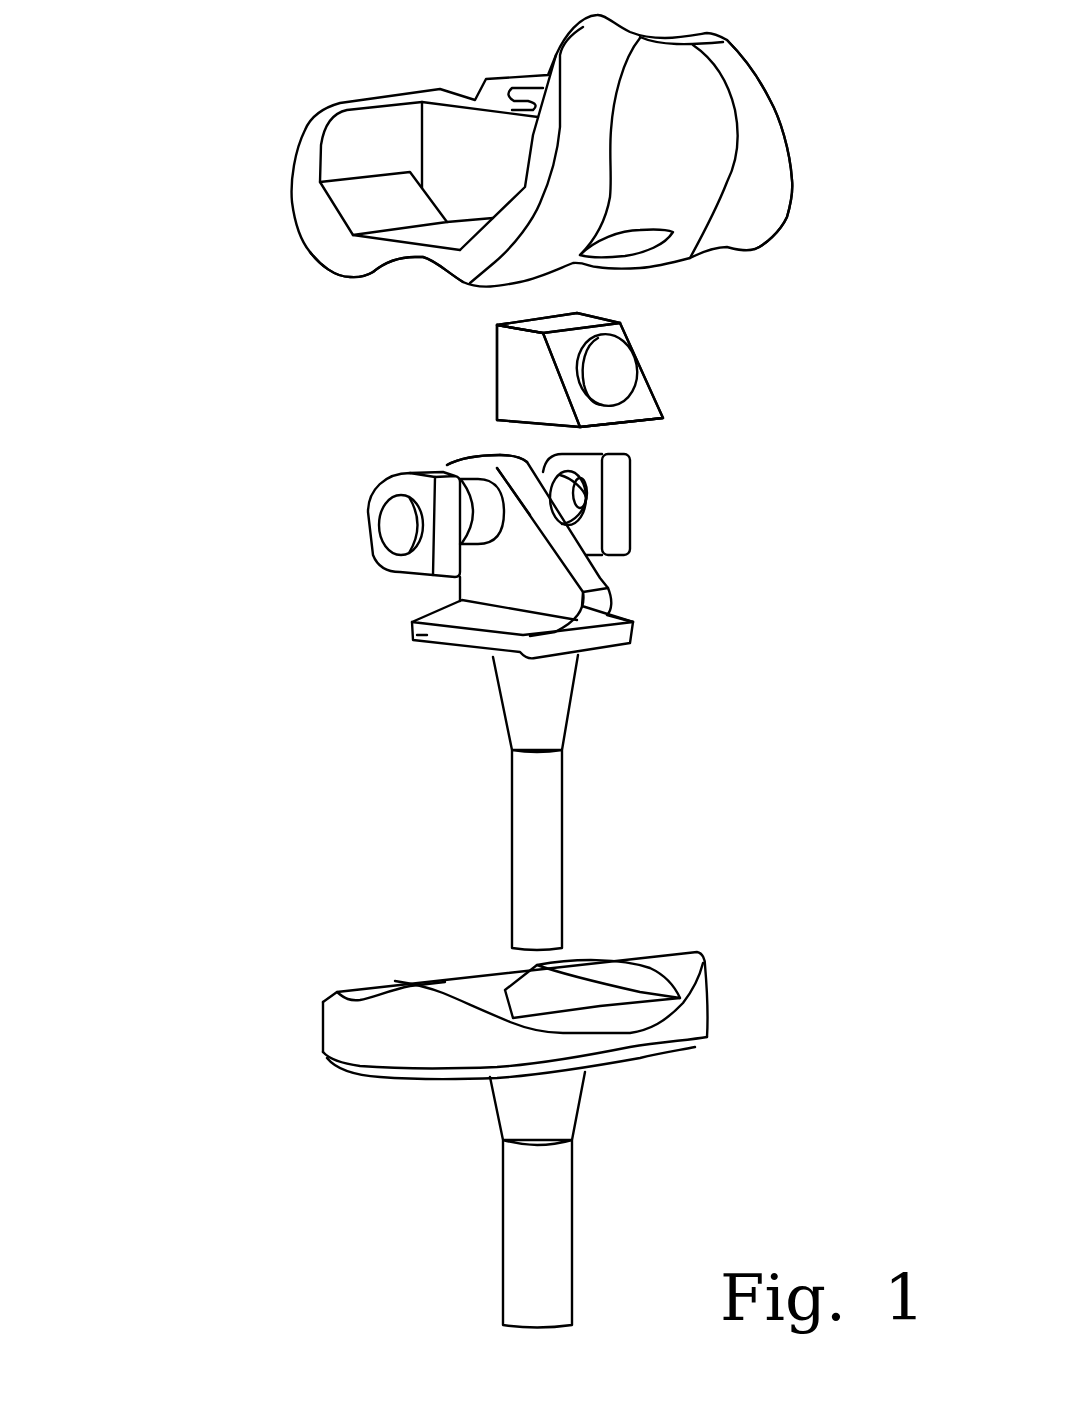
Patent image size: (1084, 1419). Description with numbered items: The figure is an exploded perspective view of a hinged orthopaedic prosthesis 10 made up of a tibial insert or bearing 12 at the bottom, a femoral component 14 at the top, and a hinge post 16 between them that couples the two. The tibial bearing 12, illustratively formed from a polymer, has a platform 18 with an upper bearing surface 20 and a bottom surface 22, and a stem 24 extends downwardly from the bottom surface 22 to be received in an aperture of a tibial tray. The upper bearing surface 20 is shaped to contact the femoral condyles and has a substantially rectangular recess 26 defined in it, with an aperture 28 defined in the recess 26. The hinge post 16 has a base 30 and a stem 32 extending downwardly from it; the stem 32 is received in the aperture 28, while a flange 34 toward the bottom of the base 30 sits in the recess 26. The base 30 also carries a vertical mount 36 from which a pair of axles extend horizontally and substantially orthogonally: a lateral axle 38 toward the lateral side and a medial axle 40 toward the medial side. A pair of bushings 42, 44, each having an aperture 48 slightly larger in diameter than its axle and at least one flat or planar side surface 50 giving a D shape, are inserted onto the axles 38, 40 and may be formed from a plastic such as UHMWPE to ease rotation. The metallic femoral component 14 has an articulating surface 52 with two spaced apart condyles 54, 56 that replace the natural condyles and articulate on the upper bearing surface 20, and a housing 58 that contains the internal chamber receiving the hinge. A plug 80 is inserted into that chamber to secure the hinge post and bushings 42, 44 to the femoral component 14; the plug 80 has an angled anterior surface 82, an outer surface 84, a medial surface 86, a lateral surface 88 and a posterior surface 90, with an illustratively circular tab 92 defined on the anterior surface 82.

The hinged orthopaedic prosthesis 10 is at (236, 732).
The tibial insert or bearing 12 is at (700, 970).
The femoral component 14 is at (793, 190).
The hinge post 16 is at (600, 585).
The platform 18 is at (340, 1027).
The upper bearing surface 20 is at (430, 987).
The bottom surface 22 is at (663, 1060).
The stem 24 is at (562, 1240).
The recess 26 is at (553, 993).
The aperture 28 is at (490, 976).
The base 30 is at (627, 633).
The stem 32 is at (550, 825).
The flange 34 is at (423, 635).
The mount 36 is at (500, 463).
The lateral axle 38 is at (482, 492).
The medial axle 40 is at (540, 452).
The bushing 42 is at (380, 557).
The bushing 44 is at (603, 450).
The aperture 48 is at (388, 527).
The flat or planar side surface 50 is at (447, 580).
The articulating surface 52 is at (727, 227).
The condyle 54 is at (390, 272).
The condyle 56 is at (663, 268).
The housing 58 is at (442, 128).
The plug 80 is at (623, 340).
The anterior wall or surface 82 is at (647, 408).
The outer wall or surface 84 is at (630, 430).
The medial wall or surface 86 is at (510, 370).
The lateral wall or surface 88 is at (620, 335).
The posterior wall or surface 90 is at (493, 345).
The tab 92 is at (613, 367).